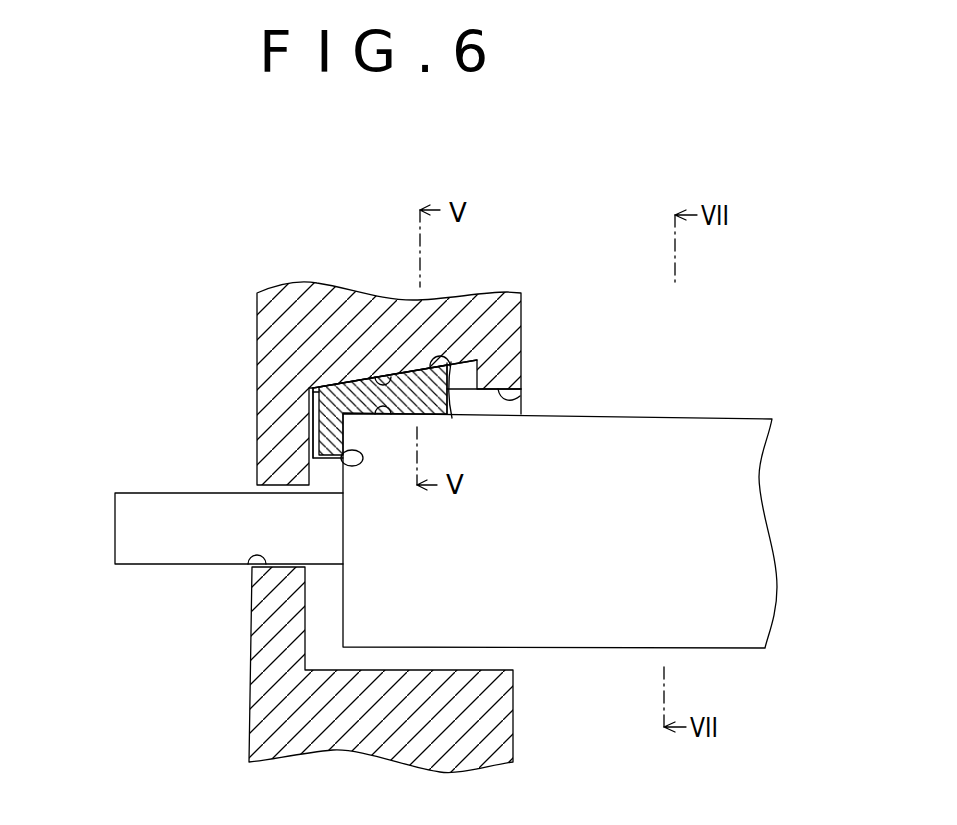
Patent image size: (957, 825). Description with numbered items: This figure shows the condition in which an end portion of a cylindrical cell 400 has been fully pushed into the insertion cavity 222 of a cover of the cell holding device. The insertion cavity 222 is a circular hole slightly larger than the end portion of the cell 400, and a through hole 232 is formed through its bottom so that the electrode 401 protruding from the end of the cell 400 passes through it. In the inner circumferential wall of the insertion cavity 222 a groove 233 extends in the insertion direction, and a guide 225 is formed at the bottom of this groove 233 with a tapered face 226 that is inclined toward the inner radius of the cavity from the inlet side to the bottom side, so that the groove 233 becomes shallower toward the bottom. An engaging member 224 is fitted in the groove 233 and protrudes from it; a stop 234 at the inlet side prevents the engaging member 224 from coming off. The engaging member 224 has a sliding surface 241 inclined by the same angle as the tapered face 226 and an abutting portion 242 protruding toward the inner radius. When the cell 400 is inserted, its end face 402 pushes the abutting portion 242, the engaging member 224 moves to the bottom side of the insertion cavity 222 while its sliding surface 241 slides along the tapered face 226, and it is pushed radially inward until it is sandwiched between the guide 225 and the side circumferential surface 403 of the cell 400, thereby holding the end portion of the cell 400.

The insertion cavity 222 is at (513, 658).
The engaging member 224 is at (424, 364).
The guide 225 is at (332, 362).
The tapered face 226 is at (382, 374).
The through hole 232 is at (248, 566).
The groove 233 is at (473, 414).
The stop 234 is at (520, 396).
The sliding surface 241 is at (472, 388).
The abutting portion 242 is at (341, 468).
The cylindrical cell 400 is at (682, 432).
The electrode 401 is at (124, 526).
The end face 402 is at (313, 393).
The side circumferential surface 403 is at (377, 414).